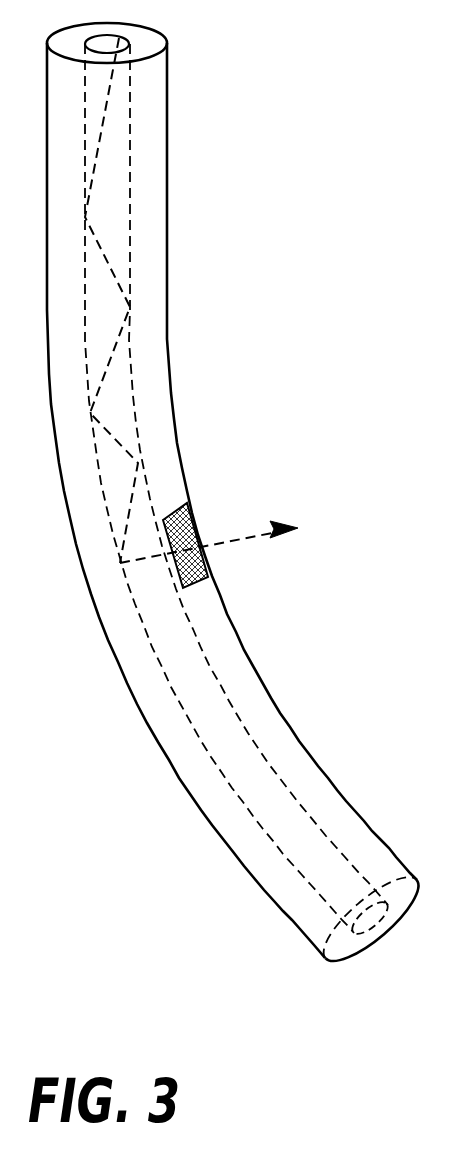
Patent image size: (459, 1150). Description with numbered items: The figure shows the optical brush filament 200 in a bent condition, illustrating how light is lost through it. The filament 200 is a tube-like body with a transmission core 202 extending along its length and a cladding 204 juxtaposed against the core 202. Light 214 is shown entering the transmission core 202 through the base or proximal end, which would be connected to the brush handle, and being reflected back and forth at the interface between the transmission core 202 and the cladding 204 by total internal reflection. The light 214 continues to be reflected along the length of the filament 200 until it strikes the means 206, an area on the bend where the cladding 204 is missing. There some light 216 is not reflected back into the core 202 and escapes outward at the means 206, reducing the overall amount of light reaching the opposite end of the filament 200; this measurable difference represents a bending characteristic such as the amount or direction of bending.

The optical brush filament 200 is at (238, 498).
The transmission core 202 is at (130, 120).
The cladding 204 is at (158, 255).
The light 214 is at (113, 355).
The means for changing a light property 206 is at (185, 505).
The escaping light 216 is at (250, 538).